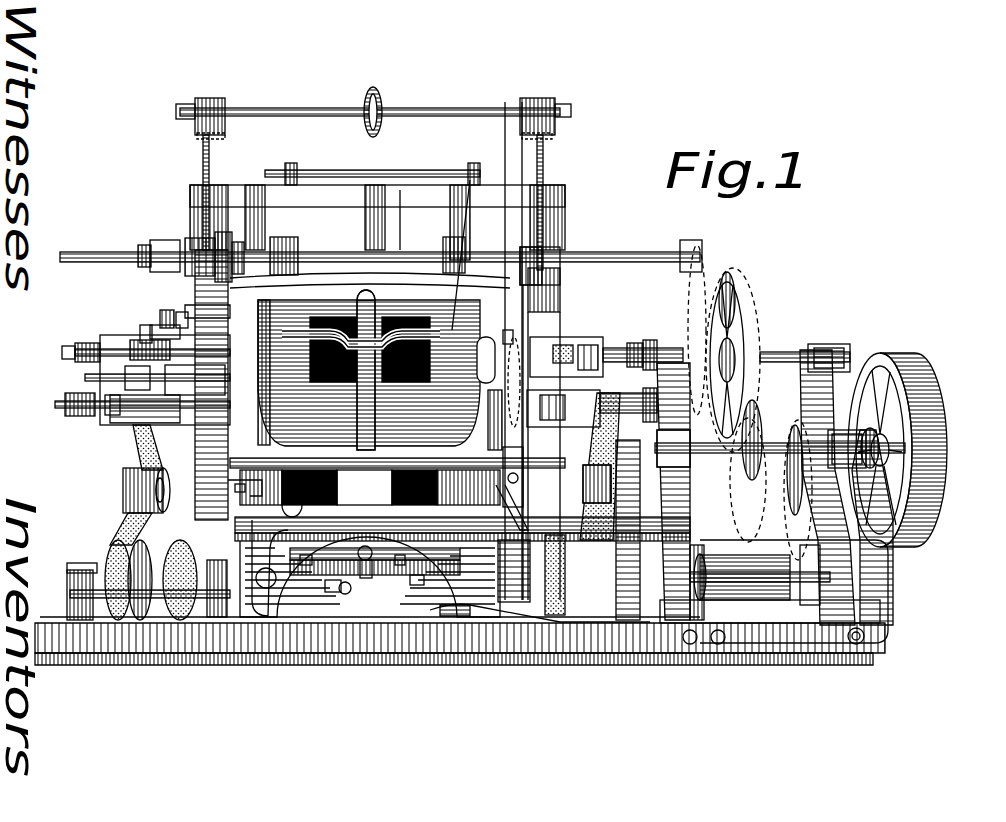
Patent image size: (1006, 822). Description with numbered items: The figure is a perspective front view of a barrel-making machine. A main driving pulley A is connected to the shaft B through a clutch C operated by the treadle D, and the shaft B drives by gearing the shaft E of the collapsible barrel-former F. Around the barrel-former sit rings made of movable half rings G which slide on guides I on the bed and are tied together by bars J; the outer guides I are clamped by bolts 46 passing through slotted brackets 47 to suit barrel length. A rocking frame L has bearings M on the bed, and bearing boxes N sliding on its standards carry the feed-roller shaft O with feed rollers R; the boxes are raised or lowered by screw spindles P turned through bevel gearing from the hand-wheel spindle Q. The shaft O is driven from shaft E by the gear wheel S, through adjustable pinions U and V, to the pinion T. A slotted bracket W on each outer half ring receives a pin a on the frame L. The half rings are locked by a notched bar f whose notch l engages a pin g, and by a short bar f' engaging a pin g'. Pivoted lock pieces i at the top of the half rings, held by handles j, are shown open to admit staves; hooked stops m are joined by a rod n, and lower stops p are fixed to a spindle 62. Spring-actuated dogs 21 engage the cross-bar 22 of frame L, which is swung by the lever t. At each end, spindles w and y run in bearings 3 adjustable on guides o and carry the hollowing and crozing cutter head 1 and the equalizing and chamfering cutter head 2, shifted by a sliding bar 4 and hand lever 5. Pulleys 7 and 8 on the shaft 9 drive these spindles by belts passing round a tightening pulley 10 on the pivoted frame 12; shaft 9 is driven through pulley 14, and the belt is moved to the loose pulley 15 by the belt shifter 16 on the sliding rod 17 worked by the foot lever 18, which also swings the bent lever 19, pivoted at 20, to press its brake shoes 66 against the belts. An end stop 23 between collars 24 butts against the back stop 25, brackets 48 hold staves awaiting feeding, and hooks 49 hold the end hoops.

The main driving pulley A is at (942, 437).
The shaft B is at (718, 455).
The clutch C is at (905, 466).
The treadle D is at (450, 623).
The shaft of the barrel-former E is at (783, 355).
The barrel-former F is at (440, 262).
The movable half ring G is at (362, 295).
The guide I is at (262, 580).
The bar J is at (215, 440).
The rocking frame L is at (560, 296).
The bearing M is at (580, 603).
The bearing box N is at (563, 244).
The feed-roller shaft O is at (670, 262).
The screw spindle P is at (524, 160).
The spindle Q is at (318, 100).
The feed roller R is at (280, 240).
The gear wheel S is at (688, 345).
The pinion T is at (695, 252).
The adjustable pinion U is at (705, 273).
The adjustable pinion V is at (703, 303).
The bracket W is at (128, 510).
The pin a is at (262, 480).
The notched bar f is at (270, 568).
The short bar f' is at (507, 488).
The pin g is at (312, 349).
The pin g' is at (442, 383).
The pivoted lock piece i is at (168, 330).
The pivoted handle j is at (361, 370).
The notch l is at (187, 310).
The stop m is at (377, 222).
The rod n is at (450, 337).
The guide o is at (125, 433).
The stop p is at (367, 560).
The lever t is at (540, 173).
The spindle w is at (72, 352).
The spindle y is at (62, 405).
The hollowing and crozing cutter head 1 is at (465, 517).
The equalizing and chamfering cutter head 2 is at (160, 440).
The bearing 3 is at (157, 428).
The sliding bar 4 is at (163, 333).
The hand lever 5 is at (183, 335).
The pulley 7 is at (107, 562).
The pulley 8 is at (177, 618).
The shaft 9 is at (400, 560).
The tightening pulley 10 is at (124, 505).
The pivoted frame 12 is at (124, 493).
The pulley 14 is at (760, 603).
The loose pulley 15 is at (720, 605).
The belt shifter 16 is at (700, 578).
The sliding rod 17 is at (793, 560).
The foot lever 18 is at (335, 592).
The bent lever 19 is at (305, 565).
The pivot 20 is at (290, 512).
The spring-actuated dog 21 is at (270, 175).
The cross-bar 22 is at (400, 190).
The end stop 23 is at (240, 348).
The adjustable collar 24 is at (213, 260).
The back stop 25 is at (187, 253).
The bolt 46 is at (375, 582).
The slotted bracket 47 is at (423, 585).
The bracket 48 is at (503, 337).
The hook 49 is at (228, 258).
The spindle 62 is at (340, 594).
The brake shoe 66 is at (103, 620).